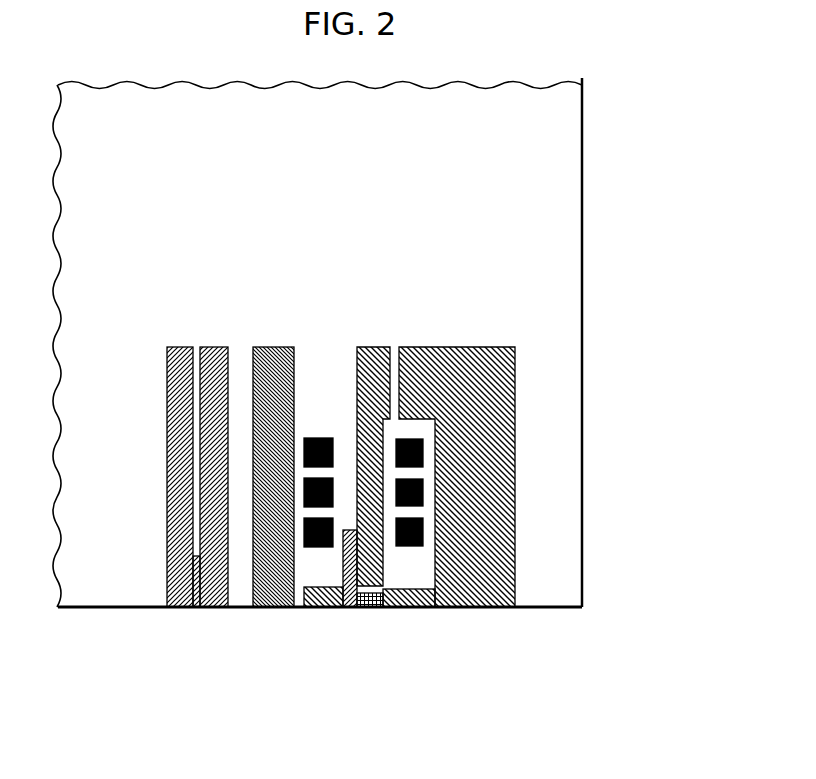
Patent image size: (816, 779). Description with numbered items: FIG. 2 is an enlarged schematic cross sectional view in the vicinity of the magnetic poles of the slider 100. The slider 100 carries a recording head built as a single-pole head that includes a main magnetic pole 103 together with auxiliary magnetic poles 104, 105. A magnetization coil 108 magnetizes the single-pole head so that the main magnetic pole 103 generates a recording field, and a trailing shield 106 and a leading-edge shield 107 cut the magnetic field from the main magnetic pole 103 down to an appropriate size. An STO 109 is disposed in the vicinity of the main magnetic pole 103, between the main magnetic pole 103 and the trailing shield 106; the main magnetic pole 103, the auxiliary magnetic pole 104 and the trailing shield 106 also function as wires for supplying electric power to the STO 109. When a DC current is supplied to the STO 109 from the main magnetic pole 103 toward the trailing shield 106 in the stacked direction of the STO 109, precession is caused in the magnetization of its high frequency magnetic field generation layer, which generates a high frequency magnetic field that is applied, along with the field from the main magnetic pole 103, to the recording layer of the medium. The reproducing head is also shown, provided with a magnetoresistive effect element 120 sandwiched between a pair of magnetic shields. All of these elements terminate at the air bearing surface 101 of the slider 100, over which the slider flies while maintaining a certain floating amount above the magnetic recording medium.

The slider 100 is at (535, 195).
The air bearing surface 101 is at (545, 610).
The main magnetic pole 103 is at (353, 609).
The auxiliary magnetic pole 104 is at (472, 352).
The auxiliary magnetic pole 105 is at (265, 609).
The trailing shield 106 is at (420, 609).
The leading-edge shield 107 is at (318, 609).
The magnetization coil 108 is at (315, 437).
The STO 109 is at (377, 609).
The magnetoresistive effect element 120 is at (193, 609).